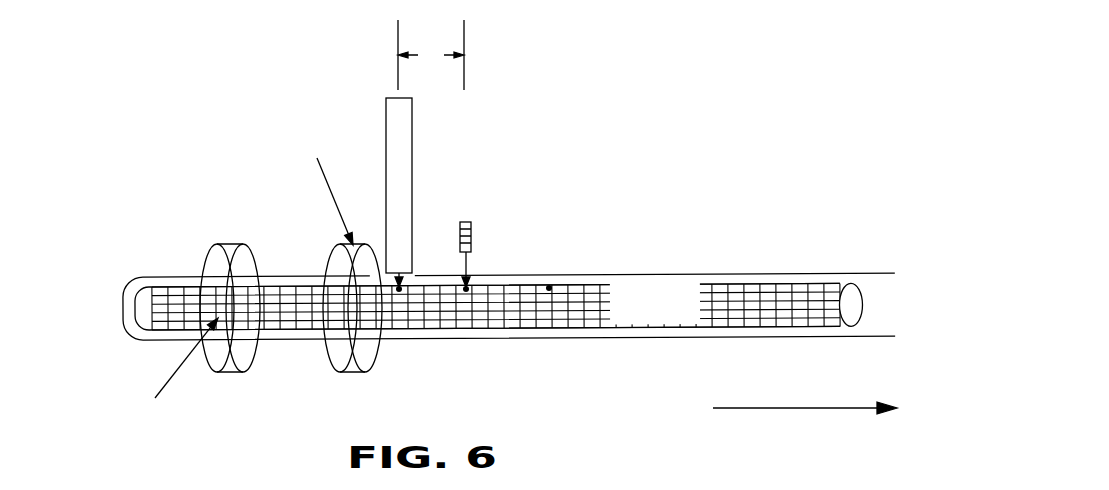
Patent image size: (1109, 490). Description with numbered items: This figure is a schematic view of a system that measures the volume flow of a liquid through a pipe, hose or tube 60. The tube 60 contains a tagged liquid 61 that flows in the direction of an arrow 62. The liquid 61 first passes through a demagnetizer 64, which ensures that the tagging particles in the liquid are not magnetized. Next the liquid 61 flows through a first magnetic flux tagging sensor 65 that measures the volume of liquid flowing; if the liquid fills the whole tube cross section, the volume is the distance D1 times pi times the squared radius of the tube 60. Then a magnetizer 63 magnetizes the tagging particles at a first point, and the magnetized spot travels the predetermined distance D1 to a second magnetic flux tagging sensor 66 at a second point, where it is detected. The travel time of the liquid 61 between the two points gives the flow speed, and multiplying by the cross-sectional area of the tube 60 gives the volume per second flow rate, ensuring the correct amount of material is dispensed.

The tube 60 is at (672, 272).
The tagged liquid 61 is at (791, 303).
The arrow 62 is at (778, 410).
The magnetizer 63 is at (388, 100).
The demagnetizer 64 is at (222, 247).
The first magnetic flux tagging sensor 65 is at (347, 362).
The second magnetic flux tagging sensor 66 is at (471, 226).